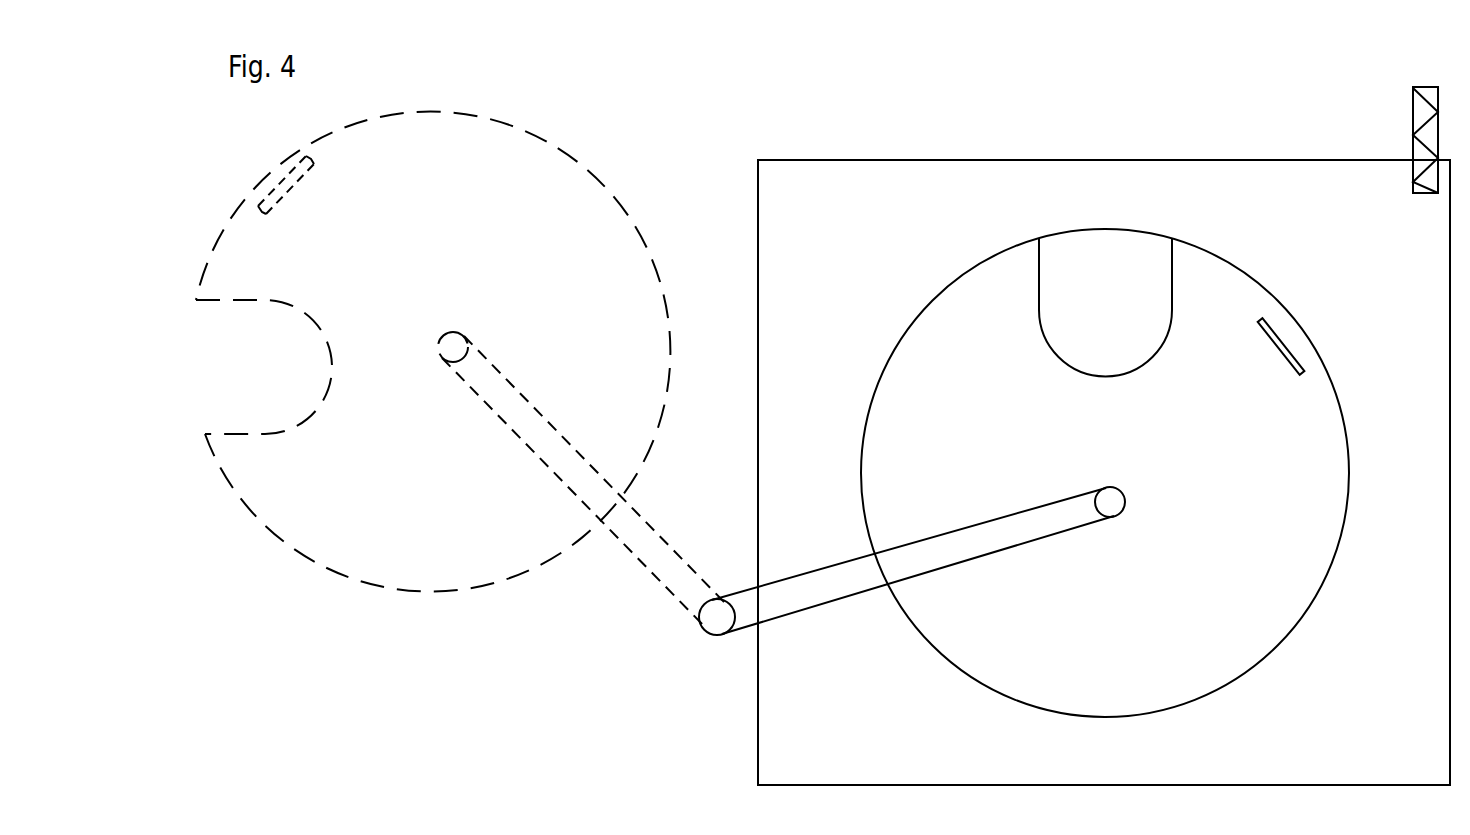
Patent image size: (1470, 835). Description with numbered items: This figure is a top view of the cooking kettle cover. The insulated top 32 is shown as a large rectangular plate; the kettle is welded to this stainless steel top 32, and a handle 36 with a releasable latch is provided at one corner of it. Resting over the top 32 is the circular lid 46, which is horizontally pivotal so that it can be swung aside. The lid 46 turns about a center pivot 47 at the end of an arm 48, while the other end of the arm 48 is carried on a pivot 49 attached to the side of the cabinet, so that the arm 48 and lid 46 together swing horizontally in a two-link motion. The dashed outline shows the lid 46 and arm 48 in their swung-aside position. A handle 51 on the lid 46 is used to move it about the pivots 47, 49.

The insulated top 32 is at (1386, 280).
The handle 36 is at (1417, 134).
The lid 46 is at (1136, 679).
The center pivot 47 is at (1118, 503).
The arm 48 is at (835, 598).
The pivot 49 is at (718, 619).
The handle 51 is at (1278, 346).